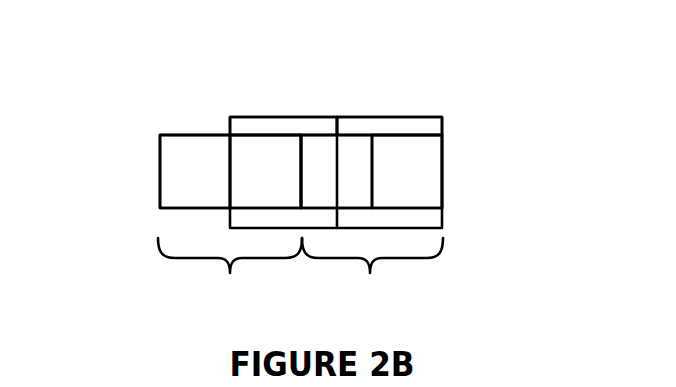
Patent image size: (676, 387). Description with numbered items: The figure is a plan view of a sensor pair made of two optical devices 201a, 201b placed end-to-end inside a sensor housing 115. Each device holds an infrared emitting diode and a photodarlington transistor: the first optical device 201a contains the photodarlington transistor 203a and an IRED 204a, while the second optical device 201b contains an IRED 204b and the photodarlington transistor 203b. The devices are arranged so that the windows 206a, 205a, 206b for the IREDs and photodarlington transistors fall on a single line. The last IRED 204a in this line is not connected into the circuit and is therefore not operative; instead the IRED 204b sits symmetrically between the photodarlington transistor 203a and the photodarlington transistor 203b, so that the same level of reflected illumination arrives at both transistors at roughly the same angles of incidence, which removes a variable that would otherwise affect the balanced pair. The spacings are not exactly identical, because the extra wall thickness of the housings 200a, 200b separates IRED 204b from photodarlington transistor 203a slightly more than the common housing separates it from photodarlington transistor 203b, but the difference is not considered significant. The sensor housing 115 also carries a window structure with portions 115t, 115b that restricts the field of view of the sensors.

The sensor housing 115 is at (442, 117).
The window structure top portion 115t is at (280, 126).
The window structure bottom portion 115b is at (379, 127).
The IRED 204a is at (195, 171).
The photodarlington transistor 203a is at (265, 171).
The IRED 204b is at (336, 171).
The photodarlington transistor 203b is at (407, 171).
The window 206a is at (193, 137).
The window 205a is at (288, 140).
The window 206b is at (428, 152).
The housing 200a is at (160, 198).
The housing 200b is at (443, 192).
The optical device 201a is at (230, 286).
The optical device 201b is at (372, 286).